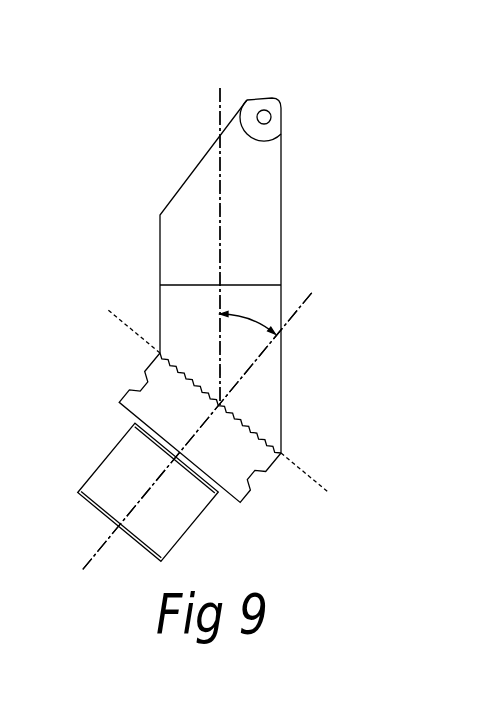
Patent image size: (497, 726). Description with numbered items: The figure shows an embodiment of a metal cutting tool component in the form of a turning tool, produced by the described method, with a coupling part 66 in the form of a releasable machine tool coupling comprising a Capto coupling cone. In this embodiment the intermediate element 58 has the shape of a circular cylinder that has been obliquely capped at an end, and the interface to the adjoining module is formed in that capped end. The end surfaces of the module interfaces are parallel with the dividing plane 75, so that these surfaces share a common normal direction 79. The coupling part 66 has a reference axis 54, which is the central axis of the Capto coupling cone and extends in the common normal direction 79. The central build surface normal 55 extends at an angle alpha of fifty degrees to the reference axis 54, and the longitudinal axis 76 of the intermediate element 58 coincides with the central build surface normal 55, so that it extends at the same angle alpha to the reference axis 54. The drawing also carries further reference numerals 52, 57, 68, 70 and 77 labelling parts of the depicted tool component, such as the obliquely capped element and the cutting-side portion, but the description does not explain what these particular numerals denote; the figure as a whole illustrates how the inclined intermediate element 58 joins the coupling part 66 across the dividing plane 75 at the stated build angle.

The transverse reference line 52 is at (281, 285).
The reference axis 54 is at (305, 303).
The central build surface normal 55 is at (219, 108).
The mounting plate 57 is at (260, 211).
The intermediate element 58 is at (170, 307).
The coupling part 66 is at (176, 522).
The threaded nut 68 is at (125, 394).
The mounting bracket 70 is at (173, 250).
The dividing plane 75 is at (320, 483).
The longitudinal axis 76 is at (200, 220).
The eyelet hole 77 is at (272, 106).
The common normal direction 79 is at (212, 432).